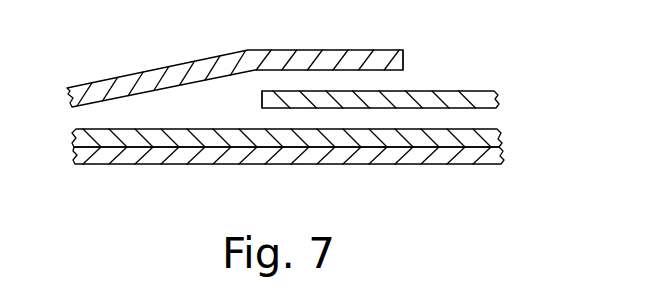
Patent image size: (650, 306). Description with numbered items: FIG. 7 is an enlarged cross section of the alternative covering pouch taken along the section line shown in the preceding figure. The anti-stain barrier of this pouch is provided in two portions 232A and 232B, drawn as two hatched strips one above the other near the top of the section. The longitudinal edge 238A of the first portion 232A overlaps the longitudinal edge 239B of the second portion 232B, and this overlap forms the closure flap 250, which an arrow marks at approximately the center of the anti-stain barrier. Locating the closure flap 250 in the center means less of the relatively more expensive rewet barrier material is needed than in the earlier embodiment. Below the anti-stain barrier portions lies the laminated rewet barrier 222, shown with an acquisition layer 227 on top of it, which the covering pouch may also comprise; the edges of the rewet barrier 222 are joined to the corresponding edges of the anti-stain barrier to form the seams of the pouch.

The anti-stain barrier portion 232A is at (185, 73).
The closure flap 250 is at (338, 42).
The longitudinal edge 238A is at (408, 67).
The anti-stain barrier portion 232B is at (407, 90).
The longitudinal edge 239B is at (262, 104).
The acquisition layer 227 is at (163, 137).
The rewet barrier 222 is at (327, 155).